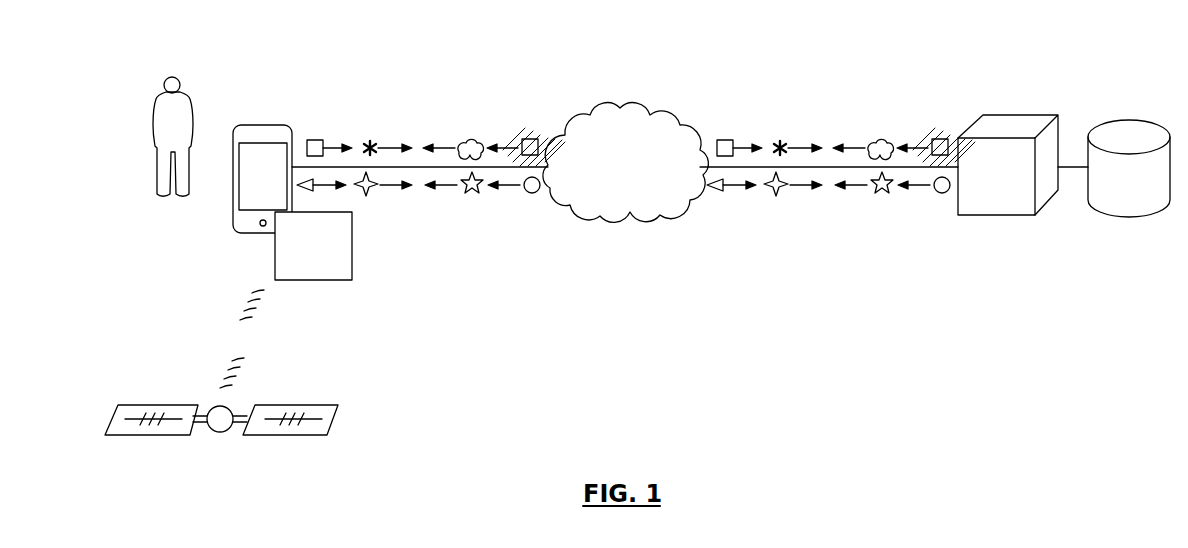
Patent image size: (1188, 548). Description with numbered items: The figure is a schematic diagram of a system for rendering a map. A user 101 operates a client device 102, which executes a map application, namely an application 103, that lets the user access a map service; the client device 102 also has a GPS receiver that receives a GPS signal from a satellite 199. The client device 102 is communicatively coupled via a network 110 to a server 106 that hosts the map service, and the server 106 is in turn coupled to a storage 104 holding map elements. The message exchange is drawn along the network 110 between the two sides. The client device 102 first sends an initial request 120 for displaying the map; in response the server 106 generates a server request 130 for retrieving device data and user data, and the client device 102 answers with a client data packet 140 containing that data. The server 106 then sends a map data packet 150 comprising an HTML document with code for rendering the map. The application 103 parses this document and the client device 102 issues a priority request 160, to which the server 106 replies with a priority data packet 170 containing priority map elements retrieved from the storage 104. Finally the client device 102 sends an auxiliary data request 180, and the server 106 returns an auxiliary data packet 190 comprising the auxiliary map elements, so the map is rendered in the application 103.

The user 101 is at (190, 98).
The client device 102 is at (263, 125).
The application 103 is at (332, 257).
The storage 104 is at (1147, 189).
The server 106 is at (1015, 189).
The network 110 is at (637, 176).
The initial request 120 is at (310, 140).
The server request 130 is at (532, 194).
The client data packet 140 is at (307, 190).
The map data packet 150 is at (531, 139).
The priority request 160 is at (375, 143).
The priority data packet 170 is at (472, 193).
The auxiliary data request 180 is at (367, 191).
The auxiliary data packet 190 is at (470, 141).
The satellite 199 is at (222, 432).